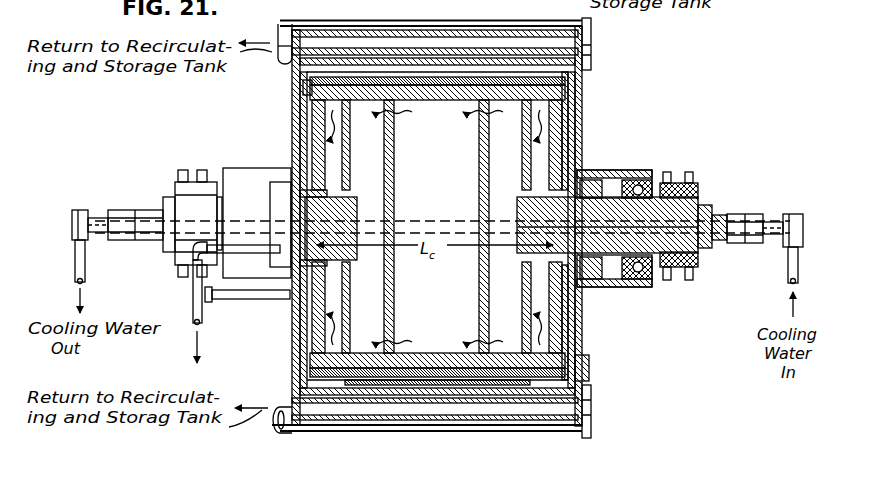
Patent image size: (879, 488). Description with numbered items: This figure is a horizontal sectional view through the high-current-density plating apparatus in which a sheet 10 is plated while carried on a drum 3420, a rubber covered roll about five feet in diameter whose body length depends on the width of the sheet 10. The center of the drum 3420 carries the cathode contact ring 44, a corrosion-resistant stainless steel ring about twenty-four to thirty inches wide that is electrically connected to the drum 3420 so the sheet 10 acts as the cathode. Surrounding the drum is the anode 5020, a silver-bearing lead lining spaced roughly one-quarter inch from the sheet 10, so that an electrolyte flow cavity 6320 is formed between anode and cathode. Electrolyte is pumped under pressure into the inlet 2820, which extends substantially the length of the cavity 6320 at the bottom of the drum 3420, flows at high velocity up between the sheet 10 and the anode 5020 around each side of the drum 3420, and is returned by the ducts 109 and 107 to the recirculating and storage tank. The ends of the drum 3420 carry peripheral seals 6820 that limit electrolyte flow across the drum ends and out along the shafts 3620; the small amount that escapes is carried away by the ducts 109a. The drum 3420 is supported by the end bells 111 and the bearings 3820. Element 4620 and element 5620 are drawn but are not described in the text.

The sheet 10 is at (497, 378).
The inlet 2820 is at (422, 221).
The drum 3420 is at (466, 294).
The shafts 3620 is at (606, 172).
The bearings 3820 is at (637, 288).
The cathode contact ring 44 is at (426, 353).
The end housing liner 4620 is at (403, 378).
The anode 5020 is at (578, 380).
The flange bolts 5620 is at (204, 170).
The electrolyte flow cavity 6320 is at (292, 76).
The peripheral seals 6820 is at (578, 360).
The duct 107 is at (285, 58).
The ducts 109 is at (568, 45).
The ducts 109a is at (194, 313).
The end bells 111 is at (582, 113).